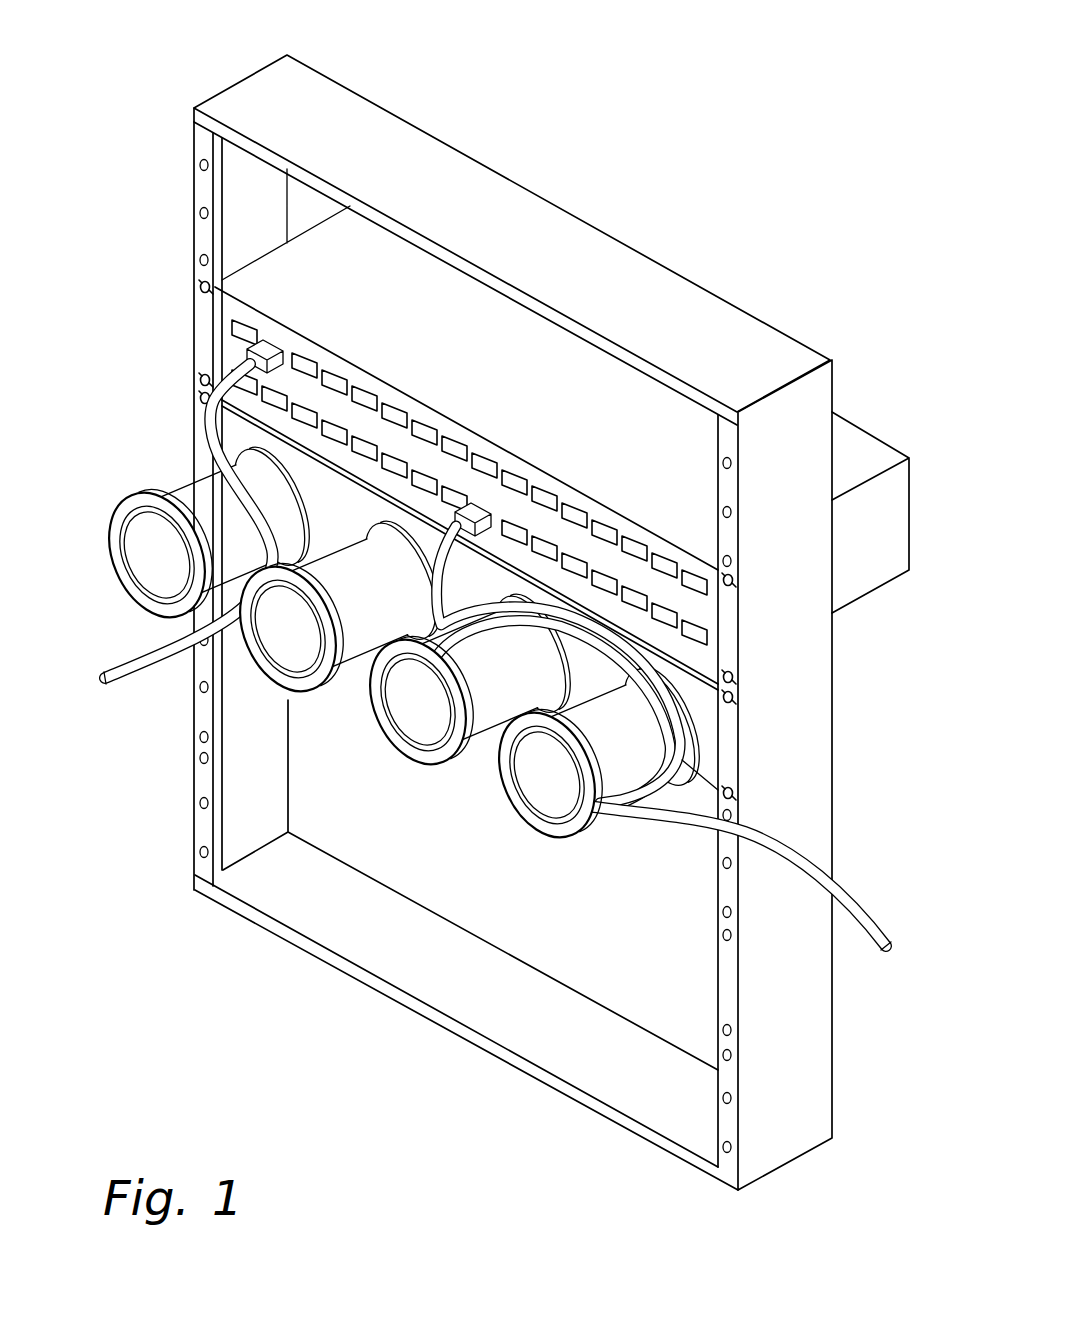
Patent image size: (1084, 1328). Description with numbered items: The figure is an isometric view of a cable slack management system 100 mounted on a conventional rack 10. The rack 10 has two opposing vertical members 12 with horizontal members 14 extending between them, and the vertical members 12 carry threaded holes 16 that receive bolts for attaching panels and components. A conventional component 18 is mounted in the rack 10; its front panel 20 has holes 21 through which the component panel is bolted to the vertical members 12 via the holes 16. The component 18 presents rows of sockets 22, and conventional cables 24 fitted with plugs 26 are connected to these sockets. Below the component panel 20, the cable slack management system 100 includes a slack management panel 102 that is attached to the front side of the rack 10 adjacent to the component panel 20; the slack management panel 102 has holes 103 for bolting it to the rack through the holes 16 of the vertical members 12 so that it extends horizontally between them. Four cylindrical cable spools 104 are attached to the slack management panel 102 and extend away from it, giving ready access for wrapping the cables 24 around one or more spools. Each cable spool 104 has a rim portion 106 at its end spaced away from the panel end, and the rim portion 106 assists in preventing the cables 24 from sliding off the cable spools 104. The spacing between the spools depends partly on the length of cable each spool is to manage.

The rack 10 is at (745, 108).
The vertical members 12 is at (192, 150).
The horizontal members 14 is at (440, 170).
The threaded holes 16 is at (200, 214).
The component 18 is at (886, 598).
The front panel 20 is at (525, 470).
The holes 21 is at (200, 288).
The sockets 22 is at (233, 330).
The cables 24 is at (215, 432).
The plugs 26 is at (262, 345).
The cable slack management system 100 is at (150, 463).
The slack management panel 102 is at (712, 745).
The holes 103 is at (203, 398).
The cable spools 104 is at (290, 517).
The rim portion 106 is at (118, 600).